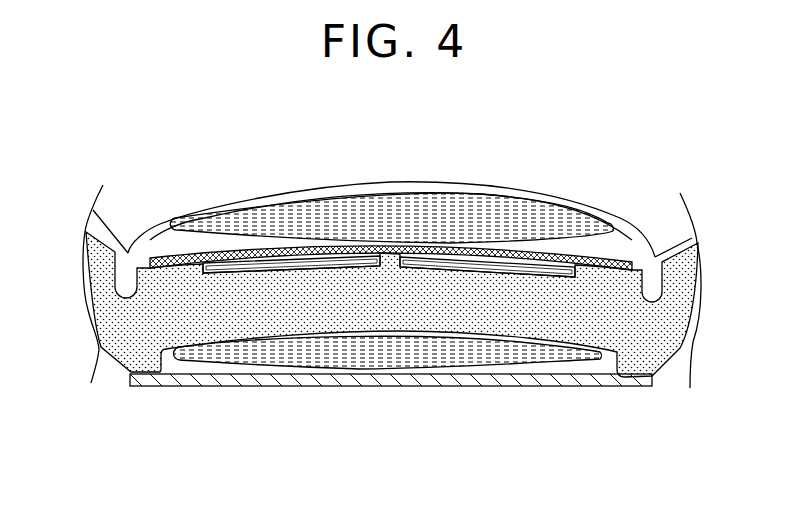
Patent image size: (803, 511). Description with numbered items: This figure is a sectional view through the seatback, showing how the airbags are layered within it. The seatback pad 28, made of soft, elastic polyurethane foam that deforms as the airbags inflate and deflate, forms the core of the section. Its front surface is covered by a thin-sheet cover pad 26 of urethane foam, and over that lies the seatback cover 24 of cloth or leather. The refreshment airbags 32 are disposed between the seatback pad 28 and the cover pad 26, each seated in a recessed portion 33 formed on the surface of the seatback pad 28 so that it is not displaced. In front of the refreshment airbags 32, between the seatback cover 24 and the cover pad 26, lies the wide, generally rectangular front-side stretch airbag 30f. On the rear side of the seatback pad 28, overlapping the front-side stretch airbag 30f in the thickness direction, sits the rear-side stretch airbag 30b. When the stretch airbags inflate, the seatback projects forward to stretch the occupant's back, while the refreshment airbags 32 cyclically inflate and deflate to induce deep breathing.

The seatback cover 24 is at (604, 208).
The cover pad 26 is at (179, 251).
The seatback pad 28 is at (562, 318).
The front-side stretch airbag 30f is at (428, 196).
The rear-side stretch airbag 30b is at (399, 358).
The refreshment airbag 32 is at (272, 256).
The recessed portion 33 is at (368, 258).